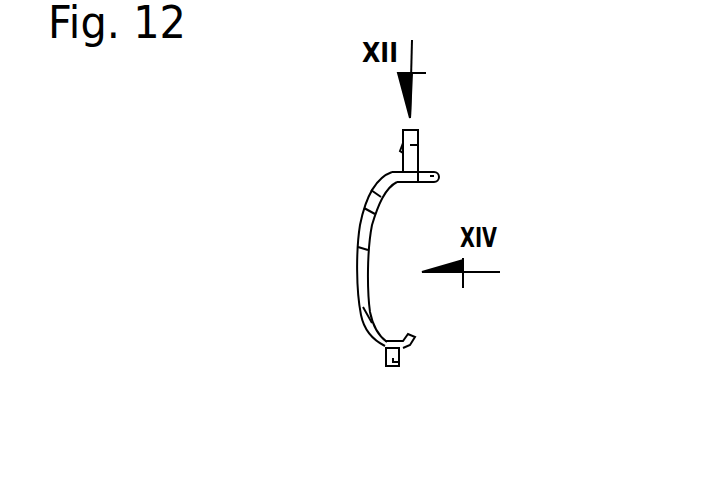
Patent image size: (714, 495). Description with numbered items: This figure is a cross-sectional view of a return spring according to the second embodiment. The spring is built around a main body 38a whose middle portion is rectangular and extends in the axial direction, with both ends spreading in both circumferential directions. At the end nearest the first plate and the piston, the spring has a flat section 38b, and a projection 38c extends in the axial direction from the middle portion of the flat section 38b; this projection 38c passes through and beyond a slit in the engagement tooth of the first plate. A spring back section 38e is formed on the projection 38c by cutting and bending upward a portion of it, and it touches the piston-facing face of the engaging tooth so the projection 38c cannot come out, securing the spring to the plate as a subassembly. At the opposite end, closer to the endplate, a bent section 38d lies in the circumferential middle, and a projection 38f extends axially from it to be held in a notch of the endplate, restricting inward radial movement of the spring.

The main body 38a is at (357, 234).
The flat section 38b is at (436, 174).
The projection 38c is at (420, 142).
The bent section 38d is at (408, 346).
The spring back section 38e is at (403, 138).
The projection 38f is at (389, 366).